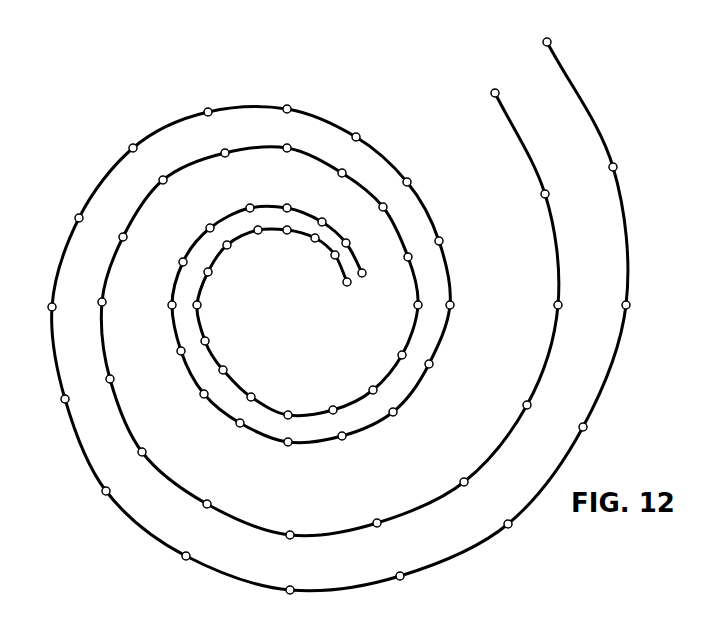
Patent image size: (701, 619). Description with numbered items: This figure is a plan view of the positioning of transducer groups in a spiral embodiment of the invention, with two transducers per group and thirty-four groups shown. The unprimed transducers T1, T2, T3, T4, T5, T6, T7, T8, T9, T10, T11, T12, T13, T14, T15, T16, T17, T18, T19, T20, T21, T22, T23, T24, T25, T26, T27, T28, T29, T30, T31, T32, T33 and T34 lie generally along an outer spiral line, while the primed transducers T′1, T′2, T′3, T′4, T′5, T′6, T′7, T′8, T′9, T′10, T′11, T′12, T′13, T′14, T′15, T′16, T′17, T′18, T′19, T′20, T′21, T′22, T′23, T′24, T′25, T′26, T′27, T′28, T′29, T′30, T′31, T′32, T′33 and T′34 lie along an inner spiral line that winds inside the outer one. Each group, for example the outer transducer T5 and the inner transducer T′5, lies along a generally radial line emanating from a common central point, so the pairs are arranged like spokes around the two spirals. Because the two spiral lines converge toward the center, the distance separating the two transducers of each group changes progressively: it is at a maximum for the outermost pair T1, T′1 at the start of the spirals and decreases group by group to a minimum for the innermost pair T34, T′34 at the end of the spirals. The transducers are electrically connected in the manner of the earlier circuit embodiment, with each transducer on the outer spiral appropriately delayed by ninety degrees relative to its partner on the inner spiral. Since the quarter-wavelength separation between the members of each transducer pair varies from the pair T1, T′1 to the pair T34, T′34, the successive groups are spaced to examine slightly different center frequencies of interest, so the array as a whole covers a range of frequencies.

The transducer T1 is at (551, 41).
The transducer T2 is at (617, 166).
The transducer T3 is at (630, 304).
The transducer T4 is at (587, 429).
The transducer T5 is at (512, 524).
The transducer T6 is at (402, 573).
The transducer T7 is at (293, 587).
The transducer T8 is at (189, 554).
The transducer T9 is at (102, 492).
The transducer T10 is at (62, 401).
The transducer T11 is at (48, 309).
The transducer T12 is at (75, 218).
The transducer T13 is at (129, 147).
The transducer T14 is at (205, 110).
The transducer T15 is at (285, 105).
The transducer T16 is at (355, 133).
The transducer T17 is at (409, 179).
The transducer T18 is at (443, 239).
The transducer T19 is at (454, 304).
The transducer T20 is at (433, 364).
The transducer T21 is at (397, 413).
The transducer T22 is at (346, 438).
The transducer T23 is at (291, 445).
The transducer T24 is at (239, 427).
The transducer T25 is at (203, 398).
The transducer T26 is at (178, 354).
The transducer T27 is at (169, 307).
The transducer T28 is at (179, 262).
The transducer T29 is at (206, 228).
The transducer T30 is at (247, 206).
The transducer T31 is at (287, 204).
The transducer T32 is at (322, 218).
The transducer T33 is at (348, 240).
The transducer T34 is at (365, 271).
The transducer T′1 is at (498, 90).
The transducer T′2 is at (549, 193).
The transducer T′3 is at (562, 304).
The transducer T′4 is at (531, 405).
The transducer T′5 is at (468, 483).
The transducer T′6 is at (379, 519).
The transducer T′7 is at (292, 532).
The transducer T′8 is at (209, 501).
The transducer T′9 is at (142, 456).
The transducer T′10 is at (108, 375).
The transducer T′11 is at (98, 304).
The transducer T′12 is at (119, 237).
The transducer T′13 is at (159, 180).
The transducer T′14 is at (222, 151).
The transducer T′15 is at (284, 146).
The transducer T′16 is at (340, 169).
The transducer T′17 is at (387, 207).
The transducer T′18 is at (412, 258).
The transducer T′19 is at (415, 307).
The transducer T′20 is at (398, 356).
The transducer T′21 is at (369, 389).
The transducer T′22 is at (331, 407).
The transducer T′23 is at (287, 411).
The transducer T′24 is at (250, 393).
The transducer T′25 is at (226, 368).
The transducer T′26 is at (208, 339).
The transducer T′27 is at (201, 305).
The transducer T′28 is at (212, 272).
The transducer T′29 is at (225, 242).
The transducer T′30 is at (259, 234).
The transducer T′31 is at (287, 234).
The transducer T′32 is at (314, 242).
The transducer T′33 is at (335, 259).
The transducer T′34 is at (350, 285).